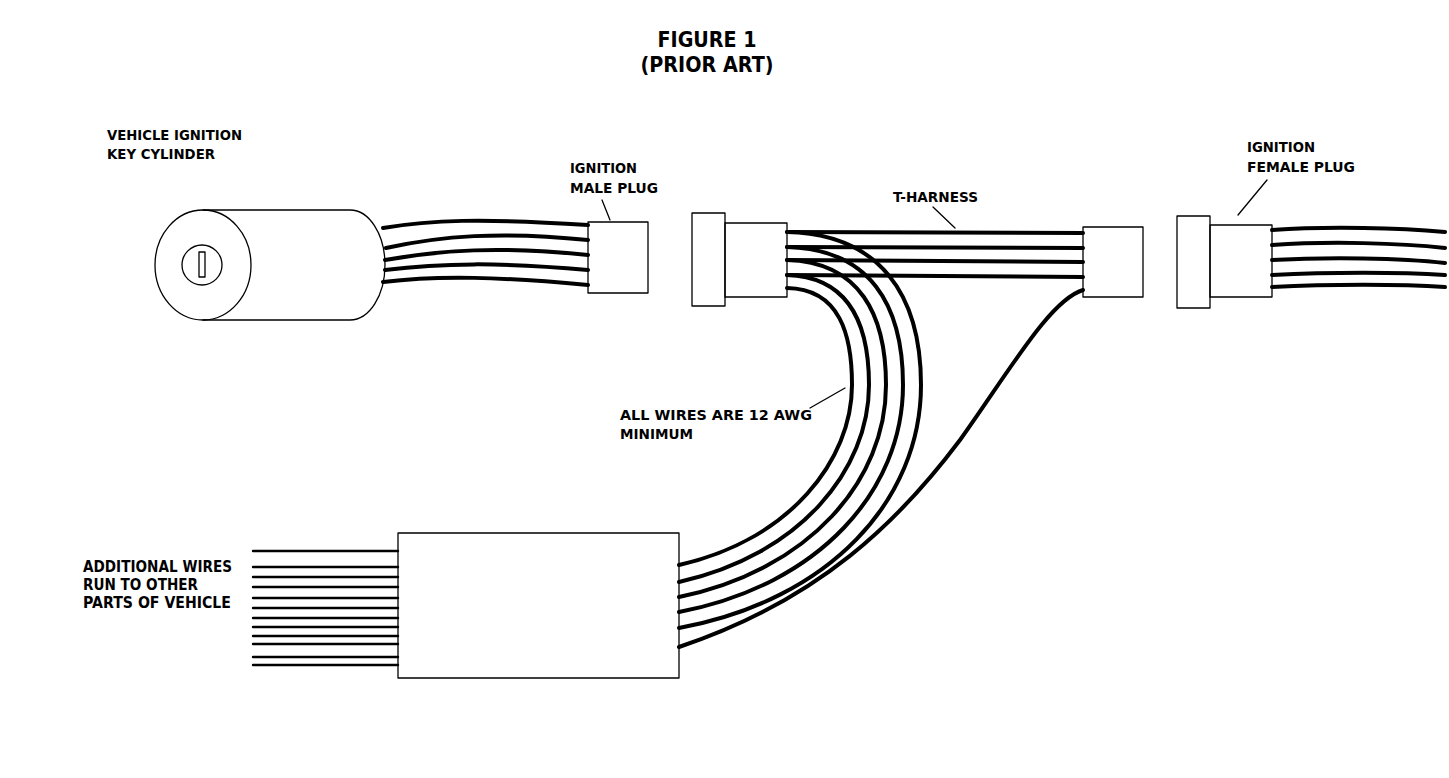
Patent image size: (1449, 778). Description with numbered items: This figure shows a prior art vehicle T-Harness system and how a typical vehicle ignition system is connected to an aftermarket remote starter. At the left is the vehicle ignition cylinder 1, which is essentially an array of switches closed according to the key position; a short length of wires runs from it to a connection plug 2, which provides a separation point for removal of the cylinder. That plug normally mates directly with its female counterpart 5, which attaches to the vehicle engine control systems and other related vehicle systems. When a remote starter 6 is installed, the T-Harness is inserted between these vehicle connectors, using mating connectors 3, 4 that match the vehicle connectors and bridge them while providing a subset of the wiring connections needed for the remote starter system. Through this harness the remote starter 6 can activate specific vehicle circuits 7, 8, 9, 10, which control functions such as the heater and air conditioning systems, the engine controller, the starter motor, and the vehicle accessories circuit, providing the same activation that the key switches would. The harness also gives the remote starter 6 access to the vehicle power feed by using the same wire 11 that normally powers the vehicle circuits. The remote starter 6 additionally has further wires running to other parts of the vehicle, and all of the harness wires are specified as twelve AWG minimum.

The vehicle ignition cylinder 1 is at (285, 203).
The connection plug 2 is at (603, 298).
The mating connector 3 is at (740, 303).
The mating connector 4 is at (1098, 298).
The female counterpart 5 is at (1222, 300).
The remote starter 6 is at (530, 523).
The vehicle circuit 7 is at (417, 288).
The vehicle circuit 8 is at (437, 273).
The vehicle circuit 9 is at (457, 261).
The vehicle circuit 10 is at (488, 236).
The wire 11 is at (513, 223).